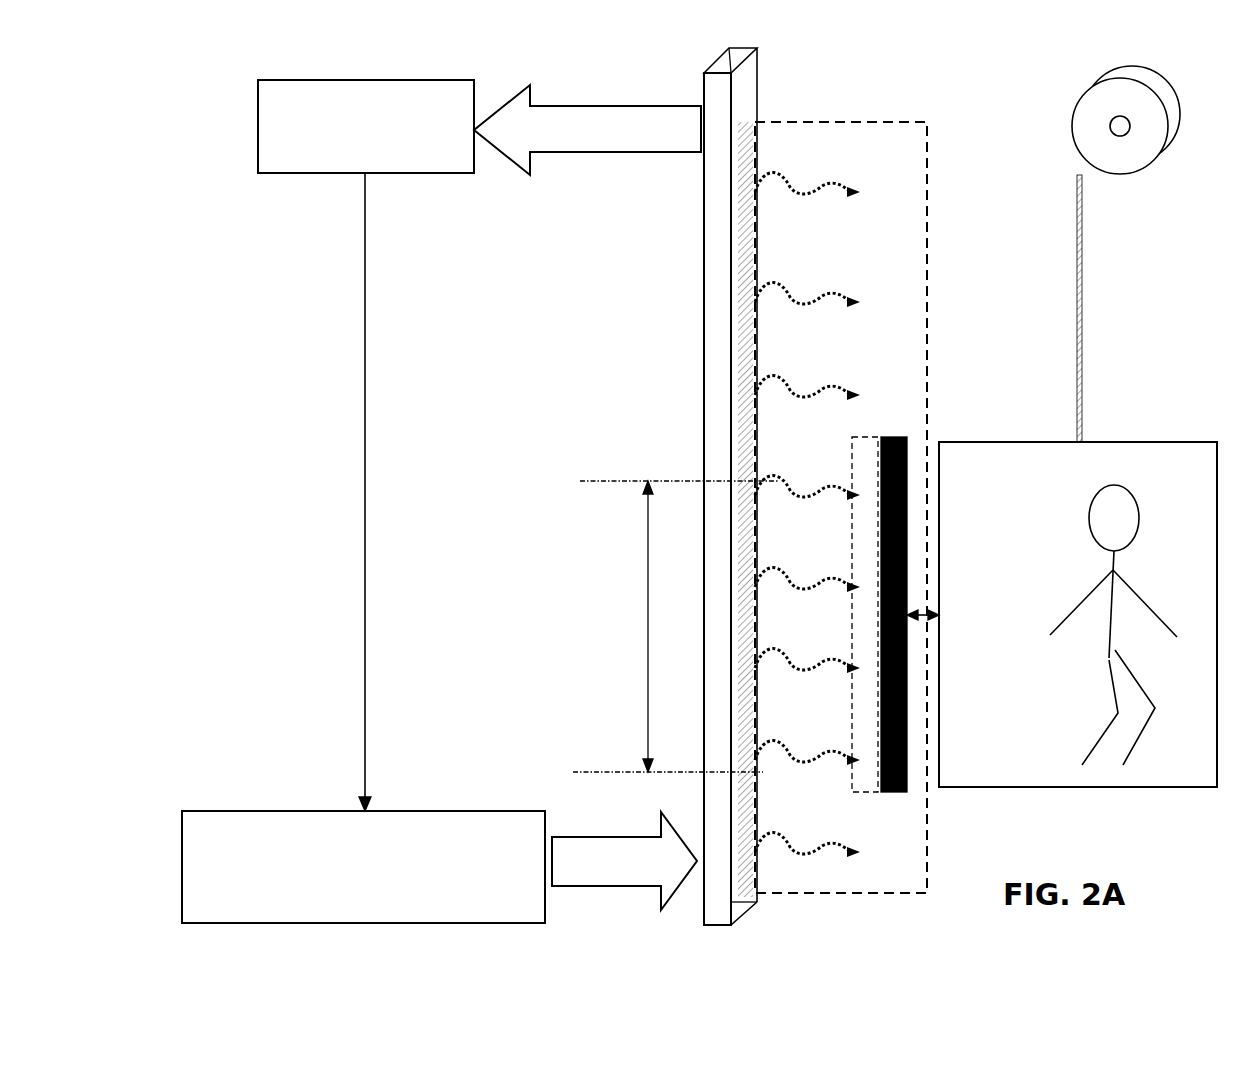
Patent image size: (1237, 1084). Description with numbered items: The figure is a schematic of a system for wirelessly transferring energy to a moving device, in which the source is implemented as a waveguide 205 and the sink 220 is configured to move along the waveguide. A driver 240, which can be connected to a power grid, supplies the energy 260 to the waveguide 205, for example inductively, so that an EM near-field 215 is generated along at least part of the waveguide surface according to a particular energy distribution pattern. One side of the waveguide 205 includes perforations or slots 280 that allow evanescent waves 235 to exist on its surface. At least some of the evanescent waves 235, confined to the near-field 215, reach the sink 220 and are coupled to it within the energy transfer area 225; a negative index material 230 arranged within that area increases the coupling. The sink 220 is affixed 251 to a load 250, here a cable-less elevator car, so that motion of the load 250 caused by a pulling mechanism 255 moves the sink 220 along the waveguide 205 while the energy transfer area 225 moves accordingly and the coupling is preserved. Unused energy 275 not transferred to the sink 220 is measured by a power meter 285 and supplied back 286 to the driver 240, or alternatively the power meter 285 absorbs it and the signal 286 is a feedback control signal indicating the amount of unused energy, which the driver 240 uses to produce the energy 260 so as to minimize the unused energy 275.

The waveguide 205 is at (703, 320).
The perforations or slots 280 is at (745, 205).
The EM near-field 215 is at (927, 275).
The evanescent waves 235 is at (787, 387).
The negative index material 230 is at (850, 437).
The sink 220 is at (888, 437).
The load 250 is at (1155, 442).
The affixing 251 is at (925, 612).
The pulling mechanism 255 is at (1075, 110).
The energy transfer area 225 is at (647, 576).
The power meter 285 is at (265, 150).
The unused energy 275 is at (520, 162).
The signal 286 is at (364, 393).
The driver 240 is at (437, 810).
The energy 260 is at (590, 836).